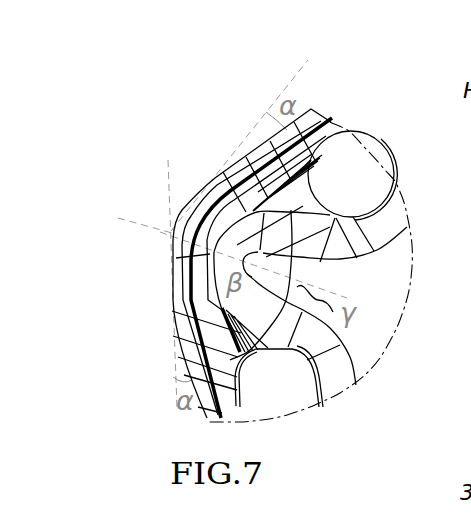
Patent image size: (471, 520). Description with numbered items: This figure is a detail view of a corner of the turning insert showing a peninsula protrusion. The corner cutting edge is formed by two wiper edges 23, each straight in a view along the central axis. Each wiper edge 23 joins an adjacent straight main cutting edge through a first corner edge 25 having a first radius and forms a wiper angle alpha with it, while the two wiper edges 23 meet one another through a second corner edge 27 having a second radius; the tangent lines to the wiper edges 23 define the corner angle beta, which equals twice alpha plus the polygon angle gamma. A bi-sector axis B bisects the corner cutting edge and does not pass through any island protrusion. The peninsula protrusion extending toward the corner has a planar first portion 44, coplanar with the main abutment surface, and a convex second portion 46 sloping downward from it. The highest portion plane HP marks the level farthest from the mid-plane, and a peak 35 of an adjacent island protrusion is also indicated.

The wiper edge 23 is at (210, 212).
The first corner edge 25 is at (215, 176).
The second corner edge 27 is at (168, 233).
The first portion 44 is at (357, 217).
The second portion 46 is at (327, 160).
The highest portion plane HP is at (380, 263).
The bi-sector axis B is at (138, 220).
The peak 35 is at (442, 519).